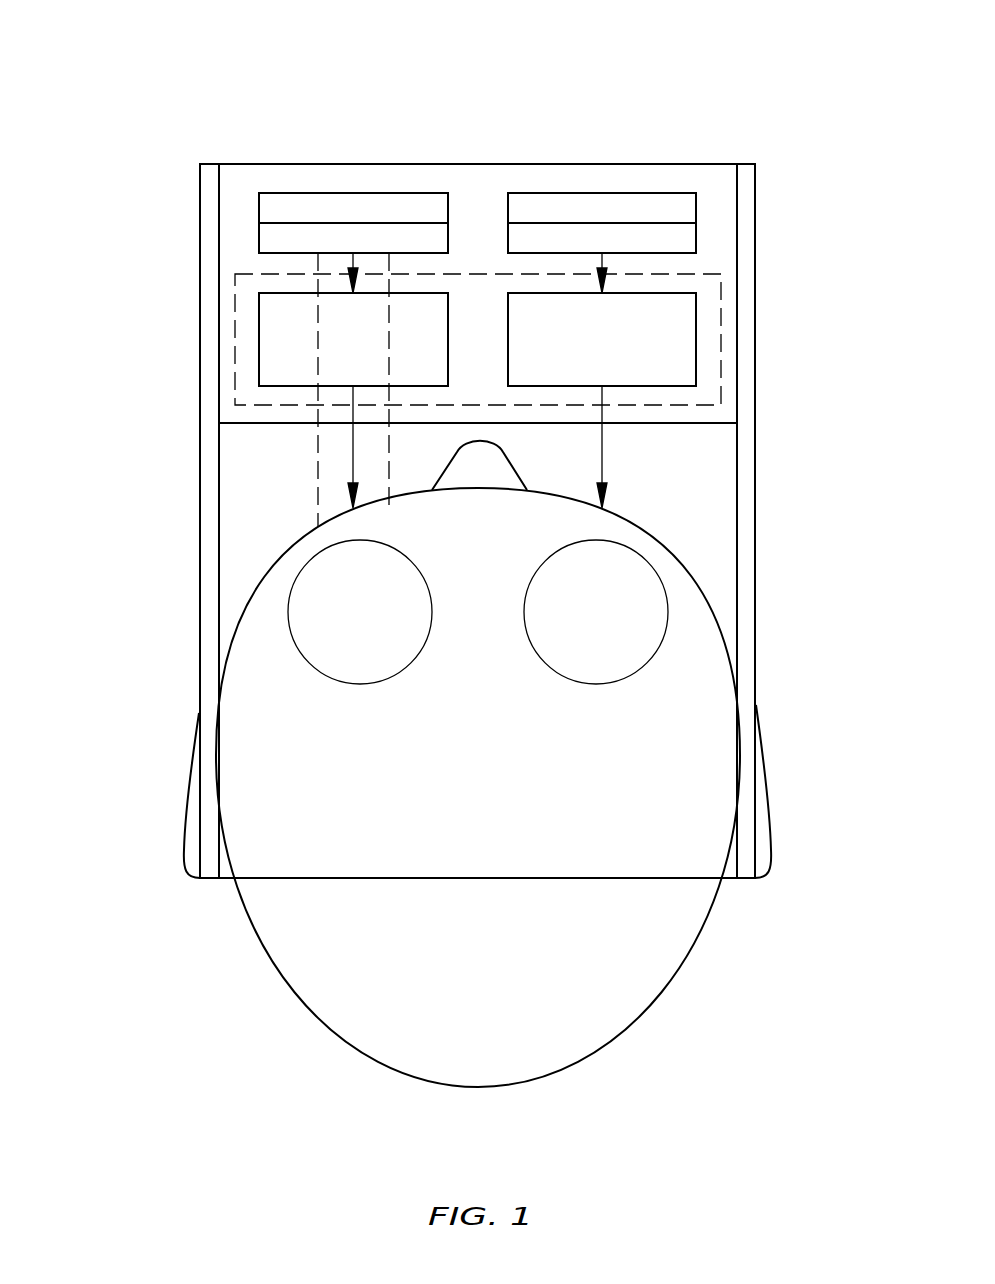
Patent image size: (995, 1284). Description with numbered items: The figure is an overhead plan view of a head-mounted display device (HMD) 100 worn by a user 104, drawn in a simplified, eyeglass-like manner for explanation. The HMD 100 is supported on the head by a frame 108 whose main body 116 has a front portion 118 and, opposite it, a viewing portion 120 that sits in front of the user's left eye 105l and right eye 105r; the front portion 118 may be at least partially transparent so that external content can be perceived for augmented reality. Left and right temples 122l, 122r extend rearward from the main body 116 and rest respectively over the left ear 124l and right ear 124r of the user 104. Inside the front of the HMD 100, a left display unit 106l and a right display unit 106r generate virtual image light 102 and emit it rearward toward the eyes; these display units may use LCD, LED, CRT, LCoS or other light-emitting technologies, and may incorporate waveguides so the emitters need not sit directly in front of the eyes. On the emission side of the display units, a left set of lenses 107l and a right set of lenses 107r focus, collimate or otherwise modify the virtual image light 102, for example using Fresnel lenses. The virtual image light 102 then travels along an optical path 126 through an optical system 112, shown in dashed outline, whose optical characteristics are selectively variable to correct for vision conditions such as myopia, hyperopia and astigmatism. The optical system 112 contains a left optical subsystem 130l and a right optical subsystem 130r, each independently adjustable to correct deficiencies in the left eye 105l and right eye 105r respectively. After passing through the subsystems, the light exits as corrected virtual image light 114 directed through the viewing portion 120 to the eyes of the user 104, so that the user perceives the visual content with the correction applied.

The head-mounted display device 100 is at (126, 58).
The front portion 118 is at (320, 148).
The viewing portion 120 is at (251, 424).
The frame 108 is at (180, 320).
The main body 116 is at (778, 320).
The left temple 122l is at (198, 521).
The right temple 122r is at (757, 518).
The left display unit 106l is at (259, 208).
The right display unit 106r is at (696, 208).
The left set of lenses 107l is at (259, 243).
The right set of lenses 107r is at (696, 242).
The optical system 112 is at (235, 304).
The left optical subsystem 130l is at (259, 346).
The right optical subsystem 130r is at (696, 346).
The optical path 126 is at (389, 278).
The virtual image light 102 is at (608, 258).
The corrected virtual image light 114 is at (608, 455).
The user 104 is at (250, 980).
The left eye 105l is at (300, 655).
The right eye 105r is at (652, 655).
The left ear 124l is at (190, 847).
The right ear 124r is at (765, 830).